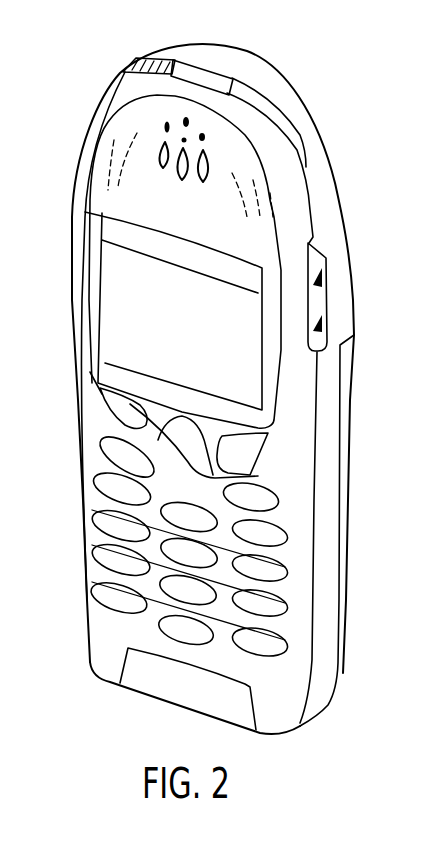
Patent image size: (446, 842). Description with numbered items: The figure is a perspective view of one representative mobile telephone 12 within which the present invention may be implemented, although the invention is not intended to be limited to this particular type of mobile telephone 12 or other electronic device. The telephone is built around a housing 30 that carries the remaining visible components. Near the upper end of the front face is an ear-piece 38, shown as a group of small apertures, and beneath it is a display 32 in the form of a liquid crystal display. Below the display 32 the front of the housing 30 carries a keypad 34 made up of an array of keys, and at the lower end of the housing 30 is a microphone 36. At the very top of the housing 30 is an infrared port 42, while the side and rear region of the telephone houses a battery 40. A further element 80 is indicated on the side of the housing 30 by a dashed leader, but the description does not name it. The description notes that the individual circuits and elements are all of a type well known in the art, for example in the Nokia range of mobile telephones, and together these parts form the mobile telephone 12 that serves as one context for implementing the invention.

The mobile telephone 12 is at (313, 51).
The housing 30 is at (336, 186).
The display 32 is at (245, 365).
The keypad 34 is at (258, 648).
The microphone 36 is at (140, 681).
The ear-piece 38 is at (165, 143).
The battery 40 is at (344, 623).
The infrared port 42 is at (205, 72).
The side key 80 is at (350, 516).